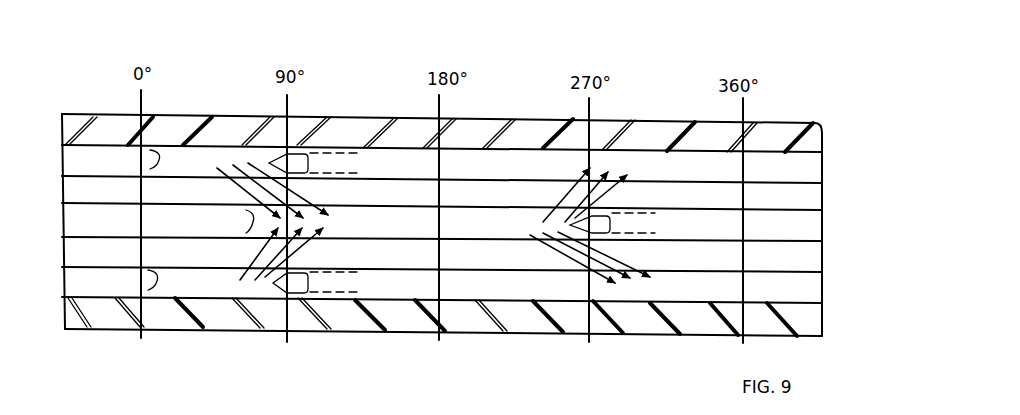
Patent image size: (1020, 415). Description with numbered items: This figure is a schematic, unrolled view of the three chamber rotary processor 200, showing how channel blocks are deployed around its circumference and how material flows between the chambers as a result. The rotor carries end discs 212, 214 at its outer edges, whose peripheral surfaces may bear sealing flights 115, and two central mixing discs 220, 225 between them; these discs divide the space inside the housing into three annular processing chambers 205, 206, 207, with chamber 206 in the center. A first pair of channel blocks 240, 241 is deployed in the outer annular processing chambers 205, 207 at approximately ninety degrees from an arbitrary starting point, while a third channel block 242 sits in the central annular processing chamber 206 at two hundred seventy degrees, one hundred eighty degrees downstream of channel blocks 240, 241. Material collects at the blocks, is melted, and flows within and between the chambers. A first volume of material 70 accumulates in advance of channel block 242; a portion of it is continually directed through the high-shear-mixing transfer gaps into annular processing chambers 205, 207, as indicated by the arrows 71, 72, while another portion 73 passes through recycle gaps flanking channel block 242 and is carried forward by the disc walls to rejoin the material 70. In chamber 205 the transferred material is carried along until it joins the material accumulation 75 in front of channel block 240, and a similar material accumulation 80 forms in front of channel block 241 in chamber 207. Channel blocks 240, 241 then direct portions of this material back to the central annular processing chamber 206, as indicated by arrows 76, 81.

The three chamber rotary processor 200 is at (738, 48).
The central mixing disc 220 is at (152, 192).
The central mixing disc 225 is at (170, 255).
The material accumulation 75 is at (190, 162).
The arrow 76 is at (258, 167).
The channel block 240 is at (300, 150).
The channel block 241 is at (297, 294).
The third channel block 242 is at (613, 227).
The material accumulation 80 is at (227, 283).
The arrow 81 is at (243, 257).
The end disc 214 is at (348, 318).
The end disc 212 is at (547, 130).
The annular processing chamber 205 is at (400, 165).
The central annular processing chamber 206 is at (697, 225).
The annular processing chamber 207 is at (448, 283).
The first volume of material 70 is at (455, 225).
The arrow 71 is at (550, 200).
The arrow 72 is at (597, 282).
The portion of material 73 is at (637, 210).
The sealing flights 115 is at (790, 143).